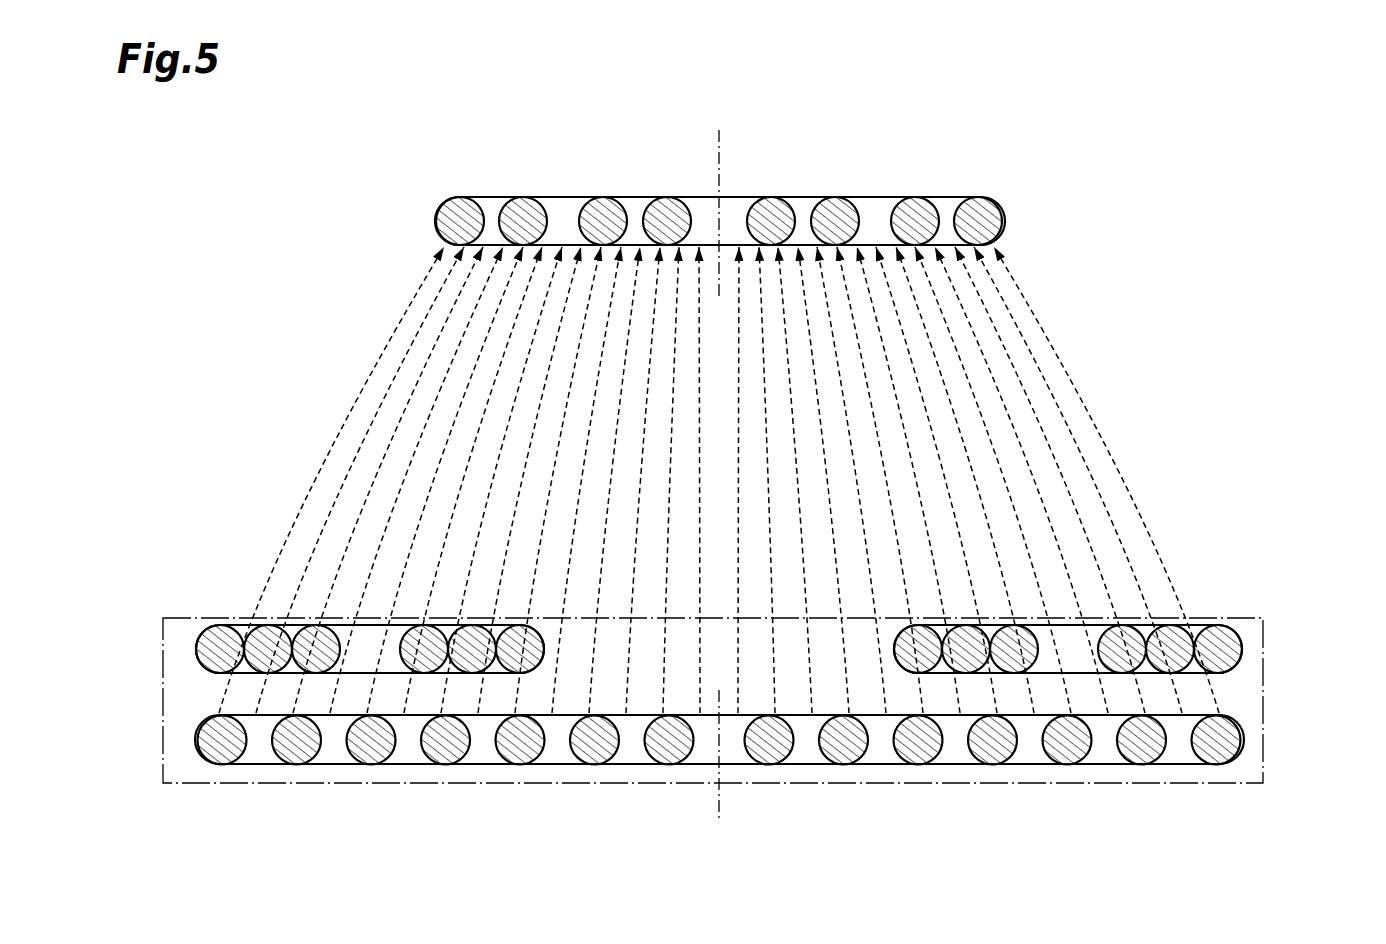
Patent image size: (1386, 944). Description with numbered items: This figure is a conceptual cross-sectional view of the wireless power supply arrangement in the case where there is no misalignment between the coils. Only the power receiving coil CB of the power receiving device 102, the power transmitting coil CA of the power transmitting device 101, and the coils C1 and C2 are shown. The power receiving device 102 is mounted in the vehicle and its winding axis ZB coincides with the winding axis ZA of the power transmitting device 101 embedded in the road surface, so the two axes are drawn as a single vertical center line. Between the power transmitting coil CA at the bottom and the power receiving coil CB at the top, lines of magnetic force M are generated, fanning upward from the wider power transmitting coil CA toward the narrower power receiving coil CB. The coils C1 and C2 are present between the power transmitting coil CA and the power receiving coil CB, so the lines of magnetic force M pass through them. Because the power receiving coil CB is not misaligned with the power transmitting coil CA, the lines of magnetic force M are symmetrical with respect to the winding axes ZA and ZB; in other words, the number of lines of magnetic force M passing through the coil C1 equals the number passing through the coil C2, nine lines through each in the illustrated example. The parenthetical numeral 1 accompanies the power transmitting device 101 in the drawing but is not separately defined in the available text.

The winding axis ZB is at (712, 153).
The power receiving coil CB is at (810, 197).
The power receiving device 102 is at (720, 181).
The lines of magnetic force M is at (302, 498).
The coil C1 is at (196, 651).
The coil C2 is at (1243, 652).
The power transmitting device 101 is at (774, 700).
The wireless power transfer system 1 is at (1263, 732).
The power transmitting coil CA is at (553, 764).
The winding axis ZA is at (720, 792).